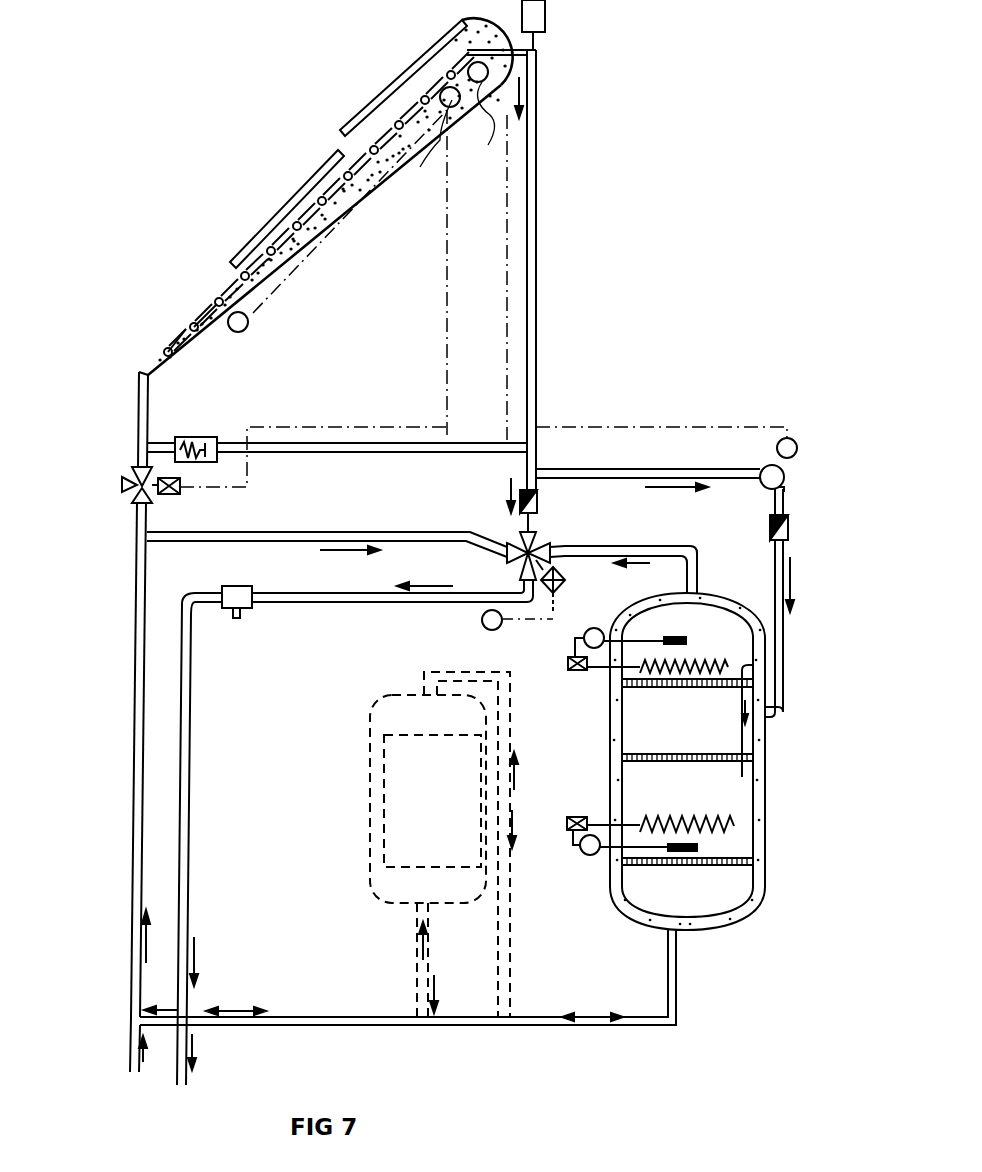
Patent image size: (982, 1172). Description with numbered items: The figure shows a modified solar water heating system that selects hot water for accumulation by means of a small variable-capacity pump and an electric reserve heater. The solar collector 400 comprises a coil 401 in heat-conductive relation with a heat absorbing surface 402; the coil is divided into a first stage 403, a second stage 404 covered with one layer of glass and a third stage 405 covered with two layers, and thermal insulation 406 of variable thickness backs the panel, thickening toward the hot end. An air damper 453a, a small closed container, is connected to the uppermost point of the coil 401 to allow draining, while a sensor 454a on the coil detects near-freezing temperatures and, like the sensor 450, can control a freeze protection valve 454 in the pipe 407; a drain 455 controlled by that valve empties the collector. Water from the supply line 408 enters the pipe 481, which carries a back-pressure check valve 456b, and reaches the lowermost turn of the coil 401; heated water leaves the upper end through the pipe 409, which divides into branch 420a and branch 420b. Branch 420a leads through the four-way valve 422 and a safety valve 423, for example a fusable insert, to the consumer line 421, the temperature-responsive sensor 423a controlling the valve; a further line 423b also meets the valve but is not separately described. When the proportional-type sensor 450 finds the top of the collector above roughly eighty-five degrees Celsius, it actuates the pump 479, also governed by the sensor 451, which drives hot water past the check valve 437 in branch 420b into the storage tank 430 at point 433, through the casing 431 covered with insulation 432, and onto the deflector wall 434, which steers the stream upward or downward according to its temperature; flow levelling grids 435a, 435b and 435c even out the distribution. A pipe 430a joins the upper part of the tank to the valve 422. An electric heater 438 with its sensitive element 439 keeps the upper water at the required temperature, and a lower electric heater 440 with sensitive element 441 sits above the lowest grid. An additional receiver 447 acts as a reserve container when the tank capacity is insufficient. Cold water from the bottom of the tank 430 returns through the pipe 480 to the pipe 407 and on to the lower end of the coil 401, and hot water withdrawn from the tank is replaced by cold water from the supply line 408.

The solar collector 400 is at (288, 118).
The coil 401 is at (165, 357).
The heat absorbing surface 402 is at (173, 343).
The first stage 403 is at (203, 307).
The second stage 404 is at (232, 262).
The third stage 405 is at (377, 103).
The thermal insulation 406 is at (328, 220).
The pipe 407 is at (134, 775).
The water supply line 408 is at (131, 1050).
The pipe 409 is at (560, 240).
The branch pipe 420a is at (526, 470).
The branch pipe 420b is at (682, 470).
The consumer line 421 is at (188, 1078).
The four-way valve 422 is at (515, 546).
The safety valve 423 is at (255, 570).
The temperature-responsive sensor 423a is at (538, 500).
The pipe 423b is at (300, 518).
The storage tank 430 is at (687, 588).
The pipe 430a is at (585, 520).
The casing 431 is at (730, 922).
The insulation 432 is at (760, 828).
The connection point 433 is at (762, 727).
The deflector wall 434 is at (747, 768).
The flow levelling grid 435a is at (748, 662).
The flow levelling grid 435b is at (720, 763).
The flow levelling grid 435c is at (722, 868).
The check valve 437 is at (788, 527).
The electric heater 438 is at (622, 667).
The sensitive element 439 is at (668, 638).
The electric heater 440 is at (665, 822).
The sensitive element 441 is at (660, 850).
The additional receiver 447 is at (368, 810).
The sensor 450 is at (473, 117).
The sensor 451 is at (245, 331).
The air damper 453a is at (565, 28).
The freeze protection valve 454 is at (132, 477).
The sensor 454a is at (380, 270).
The drain 455 is at (122, 485).
The back-pressure check valve 456b is at (202, 432).
The small variable-capacity pump 479 is at (784, 478).
The pipe 480 is at (638, 1024).
The pipe 481 is at (378, 462).